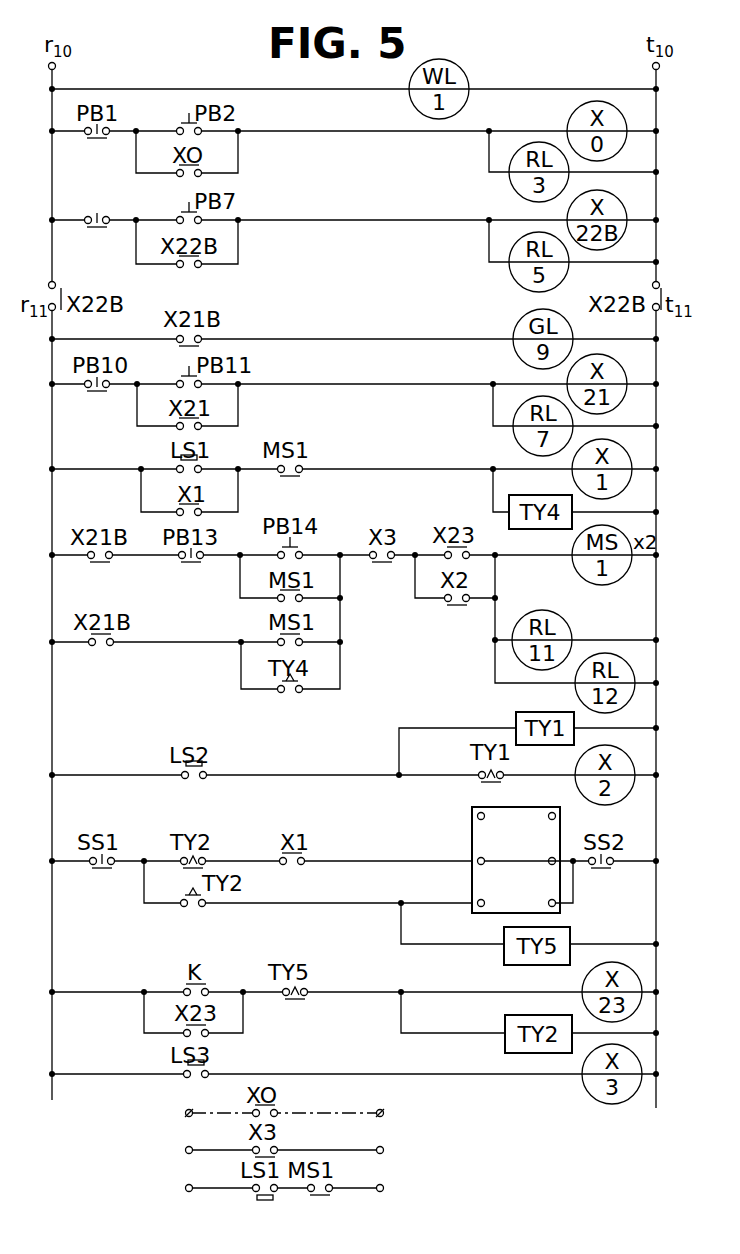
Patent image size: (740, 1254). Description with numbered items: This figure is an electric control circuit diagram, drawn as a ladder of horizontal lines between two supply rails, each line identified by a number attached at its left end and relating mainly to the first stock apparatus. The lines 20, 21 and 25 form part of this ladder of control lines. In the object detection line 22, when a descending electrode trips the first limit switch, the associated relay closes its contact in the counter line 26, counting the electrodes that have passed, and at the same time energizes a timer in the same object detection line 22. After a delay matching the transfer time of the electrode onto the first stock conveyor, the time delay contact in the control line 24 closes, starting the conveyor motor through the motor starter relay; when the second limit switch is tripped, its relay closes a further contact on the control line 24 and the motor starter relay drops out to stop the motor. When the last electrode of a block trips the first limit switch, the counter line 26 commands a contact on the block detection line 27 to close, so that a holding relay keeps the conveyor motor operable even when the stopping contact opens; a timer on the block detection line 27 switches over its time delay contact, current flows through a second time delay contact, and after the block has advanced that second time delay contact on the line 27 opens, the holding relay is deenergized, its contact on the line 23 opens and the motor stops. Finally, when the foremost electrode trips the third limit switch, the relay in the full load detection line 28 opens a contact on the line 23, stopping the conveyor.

The line 20 is at (331, 339).
The line 21 is at (331, 405).
The object detection line 22 is at (331, 484).
The line 23 is at (331, 619).
The control line for the first stock conveyor 24 is at (173, 645).
The line 25 is at (331, 758).
The counter line 26 is at (331, 886).
The block detection line 27 is at (331, 1007).
The full load detection line for the first conveyor 28 is at (331, 1074).